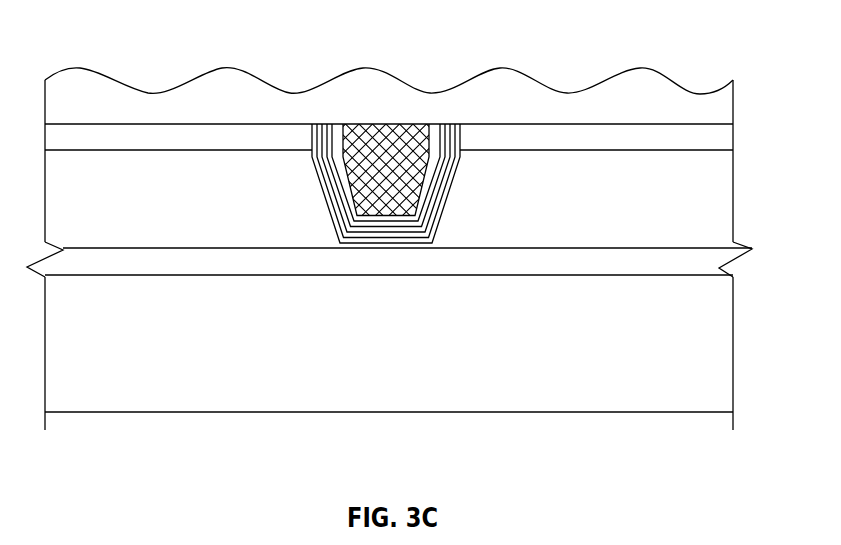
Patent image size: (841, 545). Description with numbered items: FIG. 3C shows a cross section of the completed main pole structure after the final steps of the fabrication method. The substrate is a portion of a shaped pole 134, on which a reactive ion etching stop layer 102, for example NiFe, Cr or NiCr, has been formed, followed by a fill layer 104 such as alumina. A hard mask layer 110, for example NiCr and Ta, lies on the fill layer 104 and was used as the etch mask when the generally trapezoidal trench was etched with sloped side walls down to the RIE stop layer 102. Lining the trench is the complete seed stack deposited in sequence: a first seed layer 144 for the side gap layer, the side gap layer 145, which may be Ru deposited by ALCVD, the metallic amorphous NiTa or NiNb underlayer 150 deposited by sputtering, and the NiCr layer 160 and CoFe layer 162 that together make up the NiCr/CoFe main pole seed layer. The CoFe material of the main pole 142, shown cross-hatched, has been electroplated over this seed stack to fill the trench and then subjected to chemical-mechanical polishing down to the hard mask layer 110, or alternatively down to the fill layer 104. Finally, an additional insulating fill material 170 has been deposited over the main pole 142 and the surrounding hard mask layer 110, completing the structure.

The reactive ion etching stop layer 102 is at (522, 268).
The fill layer 104 is at (712, 203).
The hard mask layer 110 is at (174, 146).
The shaped pole 134 is at (383, 398).
The main pole 142 is at (382, 125).
The first seed layer 144 is at (438, 217).
The side gap layer 145 is at (443, 188).
The metallic amorphous underlayer 150 is at (443, 153).
The NiCr layer 160 is at (341, 198).
The CoFe layer 162 is at (341, 152).
The insulating fill material 170 is at (630, 93).